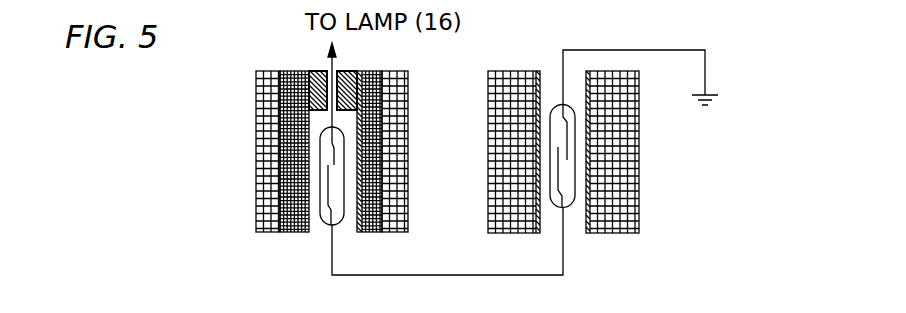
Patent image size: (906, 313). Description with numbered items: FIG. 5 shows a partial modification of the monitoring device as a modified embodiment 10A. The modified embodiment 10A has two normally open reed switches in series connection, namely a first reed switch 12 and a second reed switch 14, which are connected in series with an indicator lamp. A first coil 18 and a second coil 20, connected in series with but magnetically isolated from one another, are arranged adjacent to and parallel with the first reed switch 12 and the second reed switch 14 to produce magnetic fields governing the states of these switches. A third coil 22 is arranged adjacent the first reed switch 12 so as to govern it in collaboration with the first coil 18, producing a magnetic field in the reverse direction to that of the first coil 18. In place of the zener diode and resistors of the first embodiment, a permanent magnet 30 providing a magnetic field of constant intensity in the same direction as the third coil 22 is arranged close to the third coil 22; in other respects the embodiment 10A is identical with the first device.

The modified embodiment 10A is at (467, 75).
The first reed switch 12 is at (329, 226).
The second reed switch 14 is at (566, 206).
The first coil 18 is at (290, 195).
The second coil 20 is at (502, 233).
The third coil 22 is at (263, 176).
The permanent magnet 30 is at (346, 72).